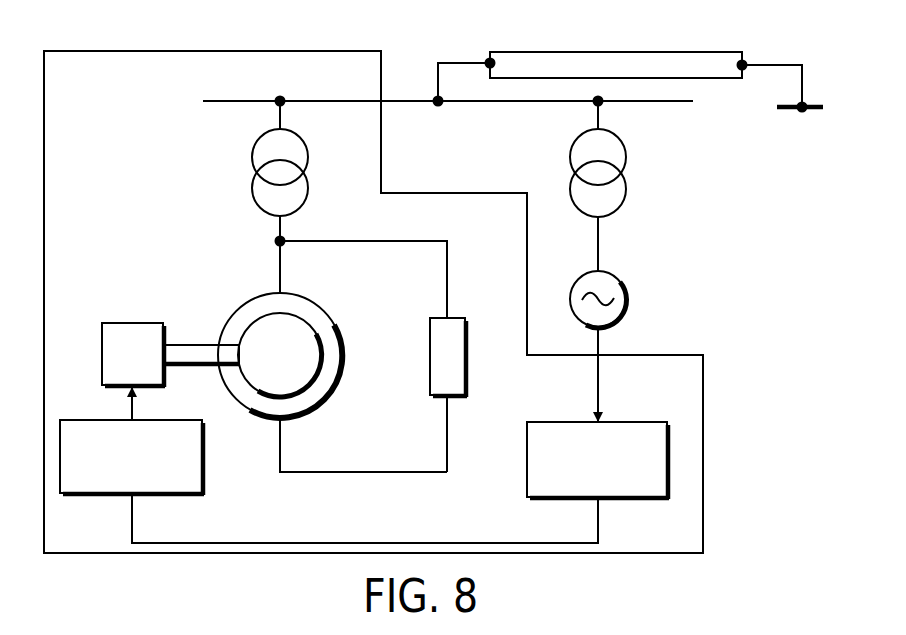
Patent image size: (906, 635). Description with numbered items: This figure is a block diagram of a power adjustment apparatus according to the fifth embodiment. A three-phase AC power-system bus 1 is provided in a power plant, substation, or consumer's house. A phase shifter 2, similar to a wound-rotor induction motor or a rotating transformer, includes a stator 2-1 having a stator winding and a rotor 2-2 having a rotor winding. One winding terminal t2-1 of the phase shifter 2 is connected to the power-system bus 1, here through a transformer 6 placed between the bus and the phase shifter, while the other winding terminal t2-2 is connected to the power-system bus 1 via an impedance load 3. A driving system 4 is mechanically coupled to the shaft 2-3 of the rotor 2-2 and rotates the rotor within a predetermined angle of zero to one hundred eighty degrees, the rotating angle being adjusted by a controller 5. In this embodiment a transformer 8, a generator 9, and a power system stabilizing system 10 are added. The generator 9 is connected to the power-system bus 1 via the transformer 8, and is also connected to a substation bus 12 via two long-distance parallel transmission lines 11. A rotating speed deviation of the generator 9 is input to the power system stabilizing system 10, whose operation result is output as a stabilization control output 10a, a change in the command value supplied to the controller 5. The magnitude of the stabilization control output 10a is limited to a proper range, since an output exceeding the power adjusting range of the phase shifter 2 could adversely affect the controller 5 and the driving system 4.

The power-system bus 1 is at (517, 104).
The phase shifter 2 is at (312, 359).
The stator 2-1 is at (341, 312).
The rotor 2-2 is at (297, 375).
The shaft 2-3 is at (191, 345).
The winding terminal t2-1 is at (282, 268).
The winding terminal t2-2 is at (281, 430).
The impedance load 3 is at (466, 354).
The driving system 4 is at (118, 322).
The controller 5 is at (203, 458).
The transformer 6 is at (308, 158).
The transformer 8 is at (626, 163).
The generator 9 is at (627, 300).
The power system stabilizing system 10 is at (527, 452).
The stabilization control output 10a is at (133, 521).
The parallel transmission lines 11 is at (560, 52).
The substation bus 12 is at (786, 111).